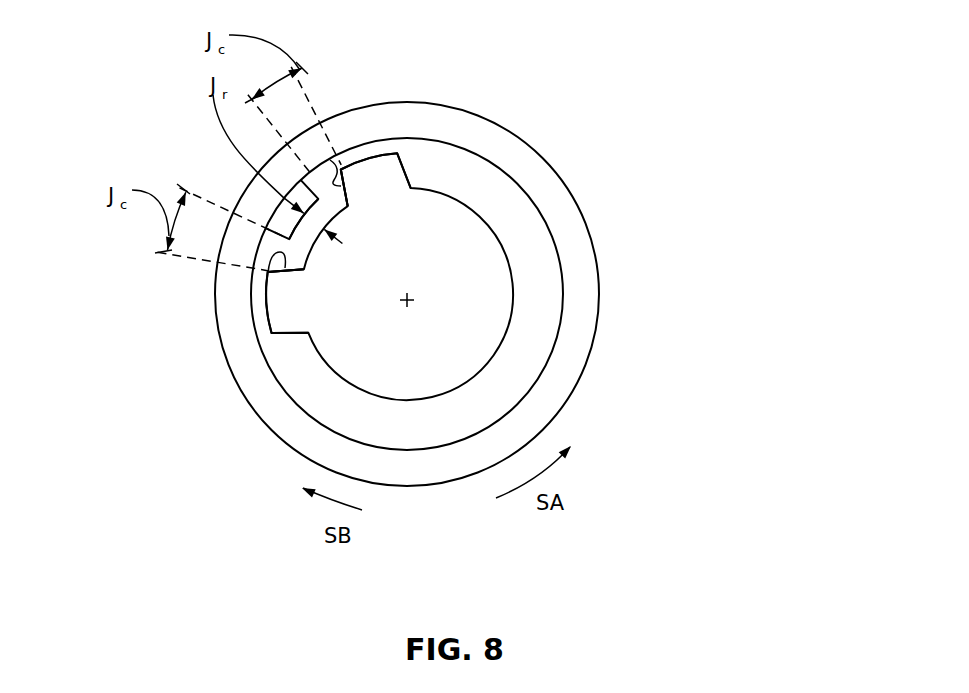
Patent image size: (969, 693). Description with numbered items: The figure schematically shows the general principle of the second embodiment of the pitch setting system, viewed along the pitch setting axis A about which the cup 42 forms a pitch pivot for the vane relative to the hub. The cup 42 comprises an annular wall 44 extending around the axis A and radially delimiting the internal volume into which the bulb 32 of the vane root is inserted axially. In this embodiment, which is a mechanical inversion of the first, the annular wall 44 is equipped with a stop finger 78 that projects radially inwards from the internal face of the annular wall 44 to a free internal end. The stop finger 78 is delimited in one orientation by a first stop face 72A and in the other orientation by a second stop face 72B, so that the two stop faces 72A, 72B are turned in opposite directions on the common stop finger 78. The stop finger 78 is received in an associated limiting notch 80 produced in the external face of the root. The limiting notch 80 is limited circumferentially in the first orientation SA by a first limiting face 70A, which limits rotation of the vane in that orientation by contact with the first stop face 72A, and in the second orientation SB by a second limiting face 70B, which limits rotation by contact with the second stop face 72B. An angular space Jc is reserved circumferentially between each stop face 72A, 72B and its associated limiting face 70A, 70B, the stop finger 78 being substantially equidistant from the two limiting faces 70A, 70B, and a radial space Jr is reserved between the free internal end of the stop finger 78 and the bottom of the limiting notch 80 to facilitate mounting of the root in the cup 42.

The bulb 32 is at (483, 258).
The cup 42 is at (602, 288).
The annular wall 44 is at (583, 338).
The first radial limiting face 70A is at (301, 180).
The second radial limiting face 70B is at (265, 232).
The first radial stop face 72A is at (340, 183).
The second radial stop face 72B is at (266, 258).
The stop finger 78 is at (288, 239).
The limiting notch 80 is at (315, 247).
The pitch setting axis A is at (411, 297).